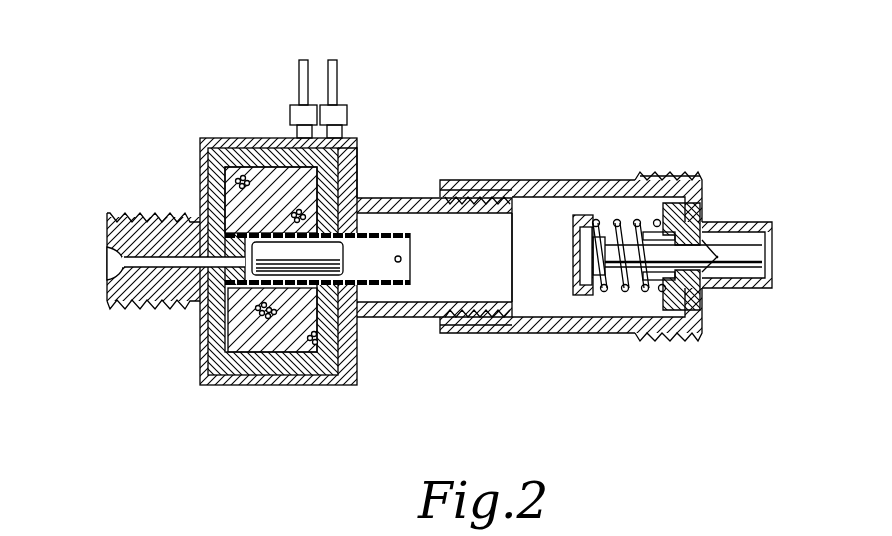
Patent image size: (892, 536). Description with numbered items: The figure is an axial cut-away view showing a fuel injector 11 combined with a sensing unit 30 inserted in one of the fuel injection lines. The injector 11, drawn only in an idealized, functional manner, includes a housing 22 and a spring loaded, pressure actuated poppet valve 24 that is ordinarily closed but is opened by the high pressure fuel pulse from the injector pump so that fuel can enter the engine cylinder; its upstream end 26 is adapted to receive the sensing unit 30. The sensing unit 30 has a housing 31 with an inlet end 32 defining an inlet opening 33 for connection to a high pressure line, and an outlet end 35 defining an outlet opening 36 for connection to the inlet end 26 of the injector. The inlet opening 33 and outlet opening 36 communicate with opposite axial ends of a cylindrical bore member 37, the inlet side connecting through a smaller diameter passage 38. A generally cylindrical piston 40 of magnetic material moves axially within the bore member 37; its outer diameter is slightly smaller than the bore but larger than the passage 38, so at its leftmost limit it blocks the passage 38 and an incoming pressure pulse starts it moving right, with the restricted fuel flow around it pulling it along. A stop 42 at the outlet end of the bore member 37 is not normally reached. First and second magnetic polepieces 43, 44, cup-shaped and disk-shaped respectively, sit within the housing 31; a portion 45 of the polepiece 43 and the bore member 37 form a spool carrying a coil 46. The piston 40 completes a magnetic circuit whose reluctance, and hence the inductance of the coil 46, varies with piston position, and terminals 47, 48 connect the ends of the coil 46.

The fuel injector 11 is at (626, 176).
The housing 22 is at (574, 182).
The poppet valve 24 is at (770, 262).
The upstream end 26 is at (430, 333).
The sensing unit 30 is at (363, 170).
The housing 31 is at (242, 142).
The inlet end 32 is at (107, 228).
The inlet opening 33 is at (128, 266).
The outlet end 35 is at (507, 190).
The outlet opening 36 is at (500, 288).
The cylindrical bore member 37 is at (396, 232).
The passage 38 is at (165, 262).
The piston 40 is at (364, 287).
The stop 42 is at (402, 258).
The first magnetic polepiece 43 is at (215, 176).
The second magnetic polepiece 44 is at (358, 137).
The portion of magnetic polepiece 45 is at (240, 272).
The coil 46 is at (268, 343).
The terminal 47 is at (299, 76).
The terminal 48 is at (338, 75).